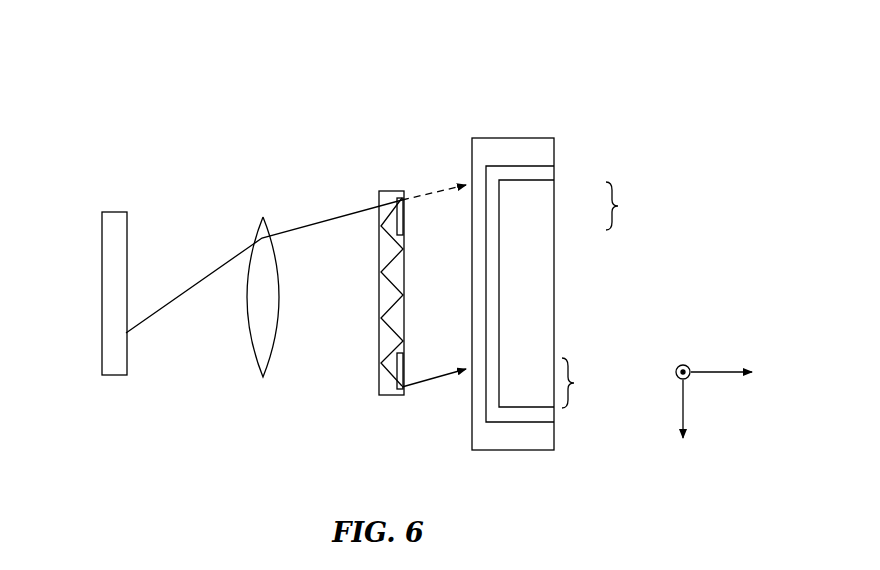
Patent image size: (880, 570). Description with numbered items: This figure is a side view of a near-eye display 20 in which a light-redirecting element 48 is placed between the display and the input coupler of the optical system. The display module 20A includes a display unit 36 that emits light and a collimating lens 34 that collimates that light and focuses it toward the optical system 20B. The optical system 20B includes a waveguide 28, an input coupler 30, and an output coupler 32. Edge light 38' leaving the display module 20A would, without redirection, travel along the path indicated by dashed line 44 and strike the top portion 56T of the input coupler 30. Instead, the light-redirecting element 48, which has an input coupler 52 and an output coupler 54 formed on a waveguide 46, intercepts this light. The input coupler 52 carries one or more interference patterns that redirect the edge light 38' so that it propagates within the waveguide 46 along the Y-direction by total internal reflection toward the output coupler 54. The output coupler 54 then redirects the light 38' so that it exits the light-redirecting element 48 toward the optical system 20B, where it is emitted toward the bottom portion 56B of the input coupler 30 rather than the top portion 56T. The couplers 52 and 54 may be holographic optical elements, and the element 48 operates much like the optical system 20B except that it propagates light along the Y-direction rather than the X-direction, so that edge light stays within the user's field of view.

The near-eye display 20 is at (544, 68).
The display module 20A is at (95, 195).
The optical system 20B is at (442, 468).
The waveguide 28 is at (552, 151).
The input coupler 30 is at (552, 205).
The output coupler 32 is at (537, 411).
The collimating lens 34 is at (248, 344).
The display unit 36 is at (113, 378).
The edge light 38' is at (296, 295).
The dashed line 44 is at (436, 187).
The waveguide 46 is at (390, 397).
The light-redirecting element 48 is at (350, 392).
The input coupler 52 is at (406, 217).
The output coupler 54 is at (406, 360).
The top portion 56T is at (633, 206).
The bottom portion 56B is at (590, 383).